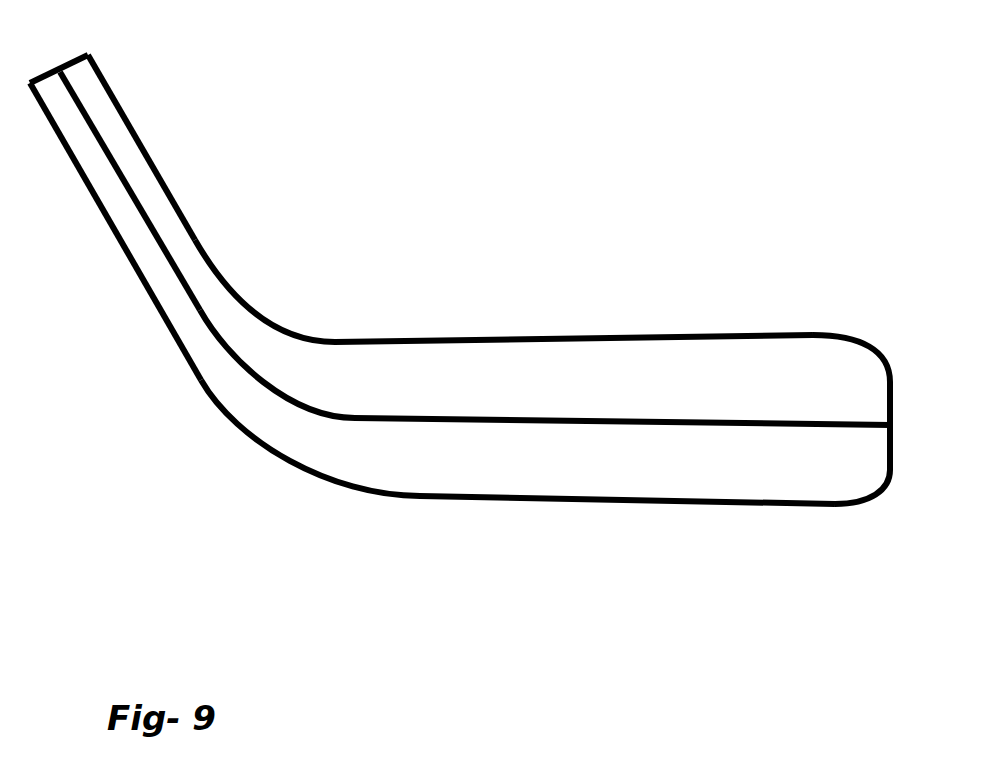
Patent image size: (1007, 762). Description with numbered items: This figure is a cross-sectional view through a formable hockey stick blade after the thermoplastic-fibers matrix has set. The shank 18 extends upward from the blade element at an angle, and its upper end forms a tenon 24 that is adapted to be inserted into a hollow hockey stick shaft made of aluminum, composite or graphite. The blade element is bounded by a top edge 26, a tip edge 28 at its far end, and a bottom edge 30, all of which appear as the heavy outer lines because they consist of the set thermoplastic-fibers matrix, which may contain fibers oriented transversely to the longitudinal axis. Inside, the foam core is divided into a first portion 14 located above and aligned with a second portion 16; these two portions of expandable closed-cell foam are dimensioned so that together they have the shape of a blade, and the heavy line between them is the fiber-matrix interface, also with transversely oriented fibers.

The first portion 14 is at (723, 389).
The second portion 16 is at (722, 478).
The shank 18 is at (192, 222).
The tenon 24 is at (118, 105).
The top edge 26 is at (612, 335).
The tip edge 28 is at (893, 392).
The bottom edge 30 is at (573, 503).